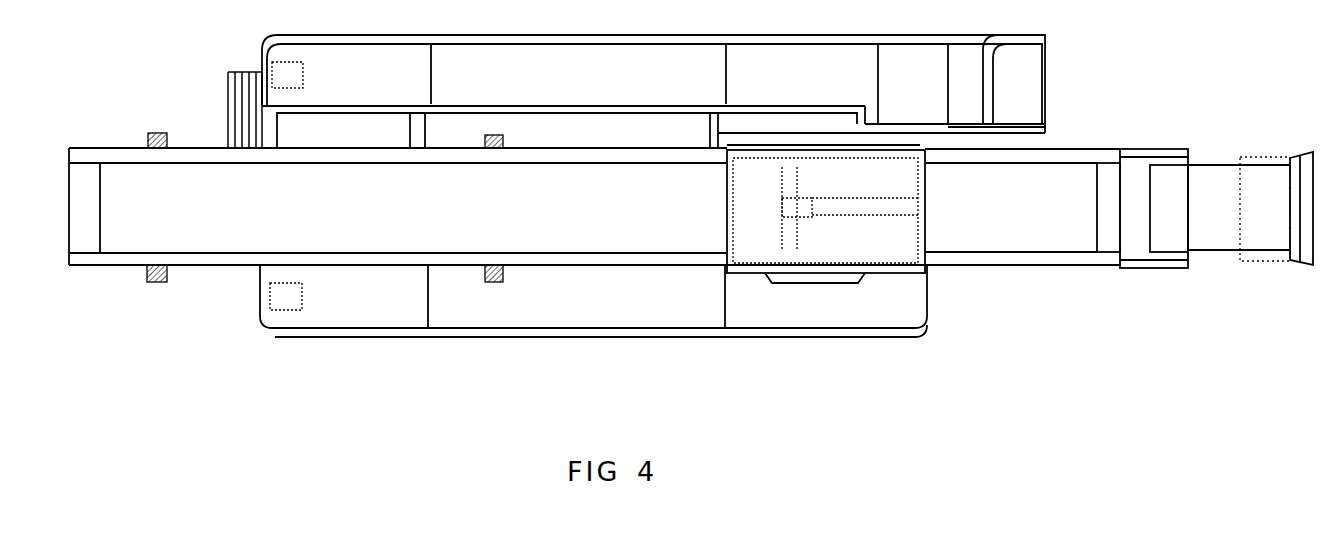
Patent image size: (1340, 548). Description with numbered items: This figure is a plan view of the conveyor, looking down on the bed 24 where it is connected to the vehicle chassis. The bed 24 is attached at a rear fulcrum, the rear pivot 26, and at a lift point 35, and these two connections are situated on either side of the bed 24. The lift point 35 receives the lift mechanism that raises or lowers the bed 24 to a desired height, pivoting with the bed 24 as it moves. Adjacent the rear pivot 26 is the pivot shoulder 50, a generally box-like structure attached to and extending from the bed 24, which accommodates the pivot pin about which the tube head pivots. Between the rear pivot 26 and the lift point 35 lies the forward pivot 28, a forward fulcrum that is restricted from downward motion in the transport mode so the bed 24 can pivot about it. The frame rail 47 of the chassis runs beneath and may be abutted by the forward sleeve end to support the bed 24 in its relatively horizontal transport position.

The bed 24 is at (150, 113).
The pivot shoulder 50 is at (170, 131).
The forward pivot 28 is at (519, 134).
The rear pivot 26 is at (148, 286).
The frame rail 47 is at (465, 317).
The lift point 35 is at (950, 143).